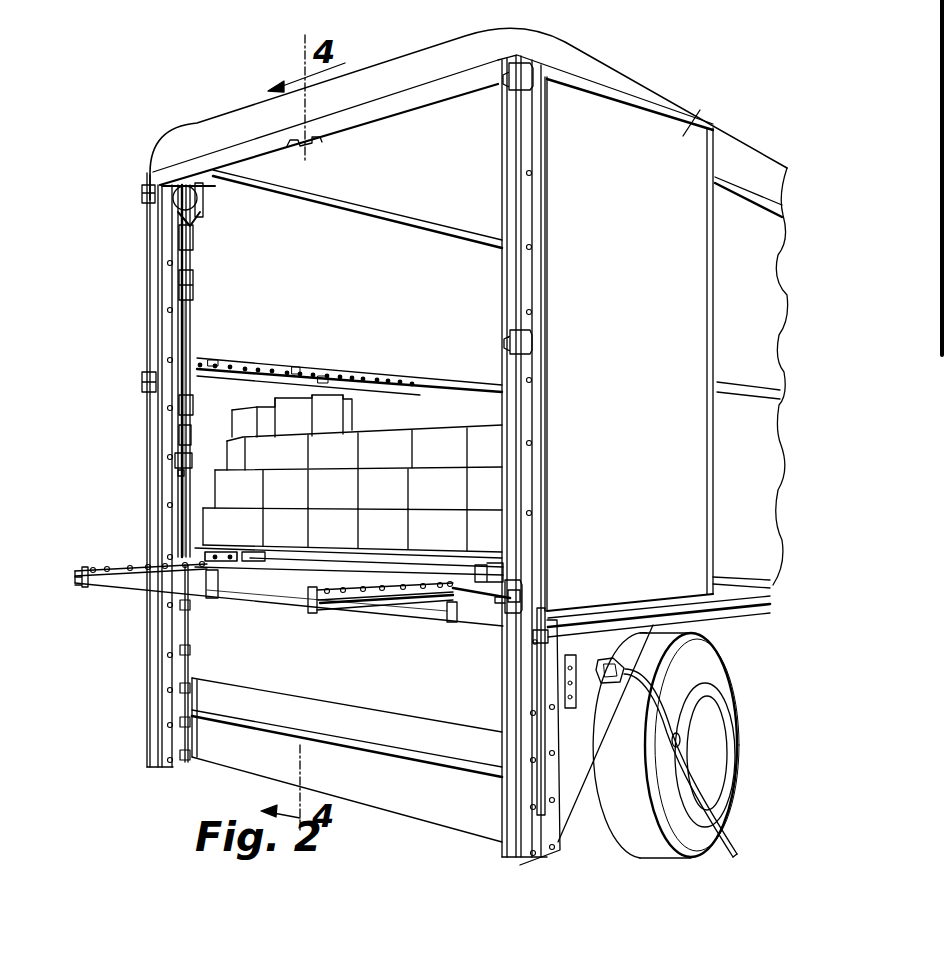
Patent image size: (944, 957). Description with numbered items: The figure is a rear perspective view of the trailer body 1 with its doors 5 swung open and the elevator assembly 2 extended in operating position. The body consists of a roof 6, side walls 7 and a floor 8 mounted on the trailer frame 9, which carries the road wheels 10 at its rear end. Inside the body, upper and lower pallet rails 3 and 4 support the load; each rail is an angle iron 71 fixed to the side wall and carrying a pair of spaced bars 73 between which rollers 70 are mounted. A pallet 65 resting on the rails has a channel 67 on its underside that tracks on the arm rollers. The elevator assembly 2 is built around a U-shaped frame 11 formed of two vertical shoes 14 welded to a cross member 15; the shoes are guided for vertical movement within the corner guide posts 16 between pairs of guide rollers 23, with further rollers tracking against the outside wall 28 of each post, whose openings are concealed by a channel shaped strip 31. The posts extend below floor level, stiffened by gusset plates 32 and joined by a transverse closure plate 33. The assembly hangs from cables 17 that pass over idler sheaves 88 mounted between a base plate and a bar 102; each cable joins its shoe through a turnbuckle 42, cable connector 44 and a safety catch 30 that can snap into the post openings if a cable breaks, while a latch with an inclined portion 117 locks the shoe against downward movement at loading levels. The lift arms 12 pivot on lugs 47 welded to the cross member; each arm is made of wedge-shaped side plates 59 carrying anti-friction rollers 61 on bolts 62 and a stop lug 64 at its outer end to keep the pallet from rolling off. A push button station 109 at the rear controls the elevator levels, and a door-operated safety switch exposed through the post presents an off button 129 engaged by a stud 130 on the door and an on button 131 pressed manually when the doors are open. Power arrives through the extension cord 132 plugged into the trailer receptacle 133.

The trailer body 1 is at (608, 60).
The elevator assembly 2 is at (176, 527).
The upper pallet rails 3 is at (248, 358).
The lower pallet rails 4 is at (204, 545).
The doors 5 is at (126, 208).
The roof 6 is at (459, 33).
The side walls 7 is at (770, 262).
The floor 8 is at (312, 572).
The trailer frame 9 is at (766, 599).
The road wheels 10 is at (644, 836).
The U-shaped frame 11 is at (350, 575).
The lift arms 12 is at (120, 592).
The vertical shoes 14 is at (177, 489).
The cross member 15 is at (258, 603).
The corner guide posts 16 is at (166, 293).
The cables 17 is at (190, 235).
The guide rollers 23 is at (186, 646).
The outside wall 28 is at (552, 777).
The safety catches 30 is at (176, 458).
The channel shaped strip 31 is at (548, 738).
The gusset plates 32 is at (592, 740).
The transverse closure plate 33 is at (442, 813).
The turnbuckle 42 is at (181, 433).
The cable connector 44 is at (190, 405).
The lugs 47 is at (218, 591).
The side plates 59 is at (367, 610).
The anti-friction rollers 61 is at (129, 568).
The bolts 62 is at (408, 604).
The stop lug 64 is at (90, 569).
The pallet 65 is at (377, 546).
The channel 67 is at (475, 572).
The rollers 70 is at (214, 360).
The angle iron 71 is at (295, 368).
The spaced bars 73 is at (322, 376).
The idler sheaves 88 is at (205, 198).
The bar 102 is at (203, 208).
The push button station 109 is at (578, 700).
The inclined portion 117 is at (190, 283).
The off button 129 is at (522, 582).
The stud 130 is at (523, 592).
The on button 131 is at (490, 602).
The extension cord 132 is at (722, 836).
The trailer receptacle 133 is at (620, 663).